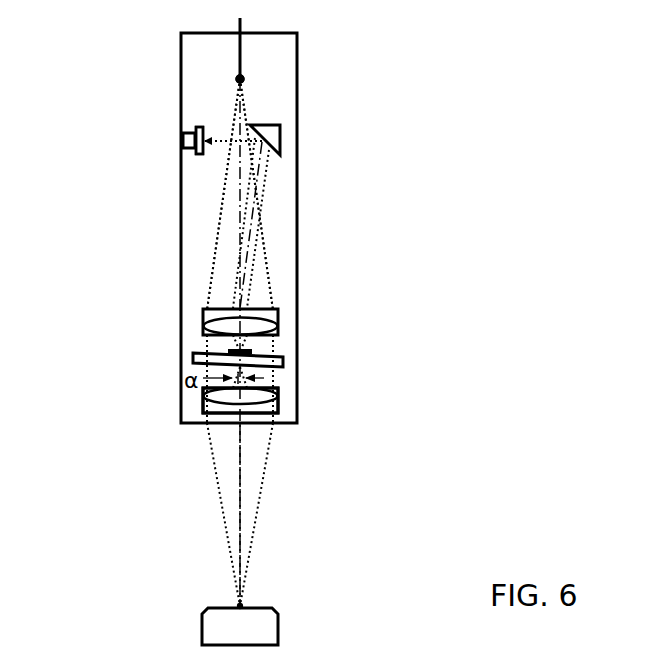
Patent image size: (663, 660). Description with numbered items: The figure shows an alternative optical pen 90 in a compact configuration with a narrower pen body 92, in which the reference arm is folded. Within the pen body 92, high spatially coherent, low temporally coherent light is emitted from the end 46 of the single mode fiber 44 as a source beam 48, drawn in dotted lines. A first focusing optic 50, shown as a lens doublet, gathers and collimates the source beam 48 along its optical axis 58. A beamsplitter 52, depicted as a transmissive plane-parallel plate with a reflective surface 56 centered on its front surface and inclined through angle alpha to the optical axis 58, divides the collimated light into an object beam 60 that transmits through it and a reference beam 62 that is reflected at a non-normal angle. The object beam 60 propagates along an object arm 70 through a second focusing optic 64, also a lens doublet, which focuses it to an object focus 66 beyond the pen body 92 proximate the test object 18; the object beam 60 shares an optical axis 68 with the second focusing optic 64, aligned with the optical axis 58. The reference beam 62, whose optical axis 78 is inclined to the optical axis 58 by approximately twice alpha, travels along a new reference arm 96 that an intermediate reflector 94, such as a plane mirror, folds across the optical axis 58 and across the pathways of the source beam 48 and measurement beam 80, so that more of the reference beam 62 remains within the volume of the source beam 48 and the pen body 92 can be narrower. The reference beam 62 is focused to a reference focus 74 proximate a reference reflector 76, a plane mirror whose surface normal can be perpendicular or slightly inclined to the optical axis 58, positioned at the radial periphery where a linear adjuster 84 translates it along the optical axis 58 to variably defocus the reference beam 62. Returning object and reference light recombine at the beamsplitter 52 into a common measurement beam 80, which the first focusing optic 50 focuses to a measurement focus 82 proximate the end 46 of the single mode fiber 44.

The test object 18 is at (278, 624).
The single mode fiber 44 is at (238, 53).
The end of the single mode fiber 46 is at (242, 78).
The source beam 48 is at (205, 282).
The first focusing optic 50 is at (203, 320).
The beamsplitter 52 is at (277, 385).
The reflective surface 56 is at (236, 352).
The optical axis of the first focusing optic 58 is at (238, 212).
The object beam 60 is at (298, 406).
The reference beam 62 is at (254, 346).
The second focusing optic 64 is at (203, 406).
The object focus 66 is at (238, 605).
The optical axis of the second focusing optic 68 is at (242, 468).
The object arm 70 is at (193, 514).
The reference focus 74 is at (206, 126).
The reference reflector 76 is at (203, 155).
The optical axis of the reference beam 78 is at (248, 265).
The measurement beam 80 is at (205, 282).
The measurement focus 82 is at (246, 80).
The linear adjuster 84 is at (183, 141).
The alternative optical pen 90 is at (333, 69).
The pen body 92 is at (298, 281).
The intermediate reflector 94 is at (277, 152).
The reference arm 96 is at (270, 198).